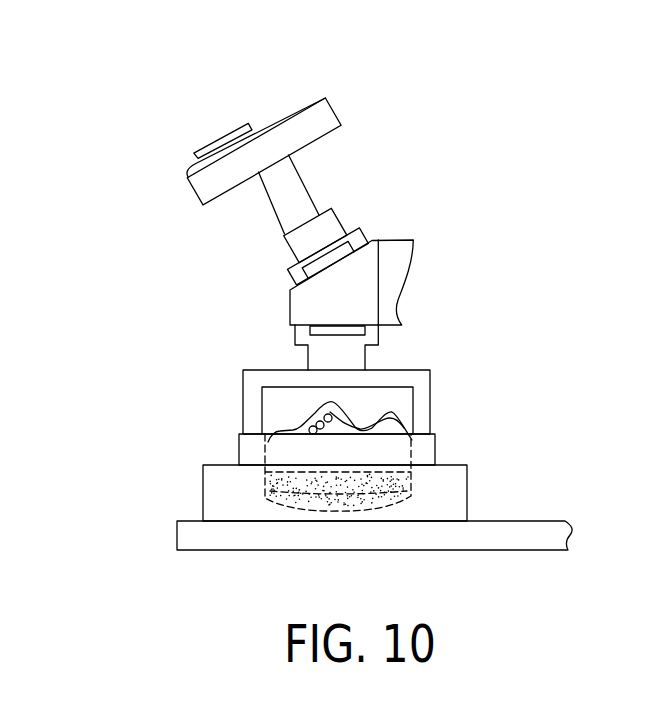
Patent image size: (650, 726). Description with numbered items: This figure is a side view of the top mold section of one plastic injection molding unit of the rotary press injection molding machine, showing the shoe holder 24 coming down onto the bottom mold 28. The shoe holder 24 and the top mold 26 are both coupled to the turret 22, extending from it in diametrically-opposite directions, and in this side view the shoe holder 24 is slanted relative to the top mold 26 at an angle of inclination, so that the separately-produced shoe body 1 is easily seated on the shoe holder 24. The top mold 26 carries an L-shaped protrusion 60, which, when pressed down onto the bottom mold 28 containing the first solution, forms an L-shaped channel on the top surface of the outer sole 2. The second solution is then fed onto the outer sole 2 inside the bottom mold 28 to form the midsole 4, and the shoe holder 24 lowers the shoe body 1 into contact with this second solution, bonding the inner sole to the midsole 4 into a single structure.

The shoe body 1 is at (303, 427).
The outer sole 2 is at (415, 500).
The midsole 4 is at (412, 492).
The turret 22 is at (305, 308).
The shoe holder 24 is at (250, 450).
The top mold 26 is at (208, 187).
The bottom mold 28 is at (223, 493).
The L-shaped protrusion 60 is at (222, 143).